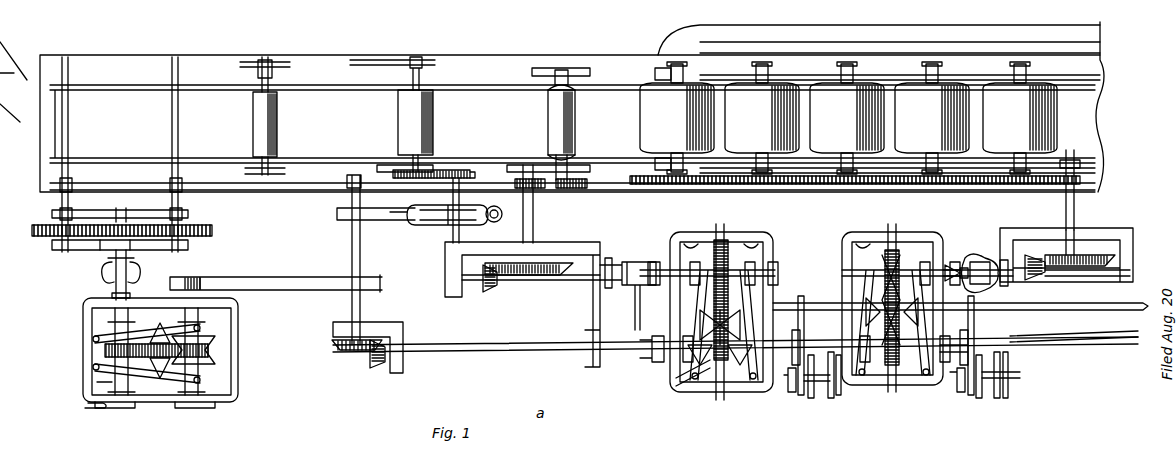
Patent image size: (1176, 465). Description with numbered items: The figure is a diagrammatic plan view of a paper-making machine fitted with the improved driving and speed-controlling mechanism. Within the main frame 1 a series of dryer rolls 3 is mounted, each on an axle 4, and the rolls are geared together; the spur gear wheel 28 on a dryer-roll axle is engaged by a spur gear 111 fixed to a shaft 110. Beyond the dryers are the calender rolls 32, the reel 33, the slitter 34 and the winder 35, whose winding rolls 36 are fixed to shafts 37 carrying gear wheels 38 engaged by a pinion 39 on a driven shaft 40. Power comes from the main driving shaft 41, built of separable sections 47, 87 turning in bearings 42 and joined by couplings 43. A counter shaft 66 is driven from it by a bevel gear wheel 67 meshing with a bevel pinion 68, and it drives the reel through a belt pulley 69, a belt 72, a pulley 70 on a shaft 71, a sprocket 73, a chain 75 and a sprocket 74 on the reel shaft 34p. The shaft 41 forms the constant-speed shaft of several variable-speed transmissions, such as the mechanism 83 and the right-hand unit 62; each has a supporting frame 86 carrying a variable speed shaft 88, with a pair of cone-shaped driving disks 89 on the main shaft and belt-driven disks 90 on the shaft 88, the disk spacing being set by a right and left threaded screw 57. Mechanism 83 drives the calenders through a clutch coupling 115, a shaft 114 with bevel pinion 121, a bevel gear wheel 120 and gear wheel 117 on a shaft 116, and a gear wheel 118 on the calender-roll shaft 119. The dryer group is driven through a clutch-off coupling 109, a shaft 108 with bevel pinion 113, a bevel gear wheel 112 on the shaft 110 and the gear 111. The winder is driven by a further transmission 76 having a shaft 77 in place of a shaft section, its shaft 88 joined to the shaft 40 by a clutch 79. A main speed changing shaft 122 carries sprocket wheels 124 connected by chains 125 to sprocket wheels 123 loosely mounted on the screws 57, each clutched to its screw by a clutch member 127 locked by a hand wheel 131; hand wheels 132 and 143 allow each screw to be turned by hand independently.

The main frame 1 is at (604, 186).
The dryer rolls 3 is at (848, 118).
The axle 4 is at (1016, 64).
The spur gear wheel 28 is at (1005, 180).
The calender rolls 32 is at (567, 118).
The reel 33 is at (424, 113).
The slitter 34 is at (278, 125).
The shaft of the reel 34p is at (410, 64).
The winder 35 is at (82, 261).
The winding rolls 36 is at (40, 232).
The shaft 37 is at (182, 210).
The gear wheels 38 is at (214, 231).
The pinion 39 is at (105, 245).
The driven shaft 40 is at (138, 245).
The main driving shaft 41 is at (1066, 346).
The bearings 42 is at (592, 368).
The couplings 43 is at (658, 365).
The shaft section 47 is at (868, 380).
The right and left threaded adjusting screw 57 is at (92, 382).
The gear casing 62 is at (928, 390).
The counter shaft 66 is at (350, 238).
The bevel gear wheel 67 is at (334, 343).
The bevel pinion 68 is at (370, 362).
The belt pulley 69 is at (340, 210).
The pulley 70 is at (440, 224).
The rotative shaft 71 is at (455, 232).
The belt 72 is at (395, 220).
The gear wheel or sprocket 73 is at (468, 176).
The gear wheel or sprocket 74 is at (400, 174).
The chain 75 is at (445, 173).
The variable speed power mechanism 76 is at (222, 400).
The shaft 77 is at (232, 302).
The clutch 79 is at (104, 278).
The variable speed power transmission mechanism 83 is at (722, 395).
The supporting frame 86 is at (845, 243).
The shaft section 87 is at (1120, 345).
The variable speed shaft 88 is at (108, 323).
The belt-driving disks 89 is at (732, 395).
The belt-driven disks 90 is at (728, 242).
The shaft 108 is at (1036, 277).
The friction clutch-off coupling 109 is at (988, 283).
The shaft 110 is at (1064, 225).
The spur gear 111 is at (1064, 180).
The bevel gear wheel 112 is at (1090, 272).
The bevel pinion 113 is at (1018, 262).
The shaft 114 is at (560, 280).
The friction clutch cut-off coupling 115 is at (632, 262).
The shaft 116 is at (535, 225).
The gear wheel 117 is at (520, 200).
The gear wheel 118 is at (561, 190).
The shaft of calender roll 119 is at (548, 165).
The bevel gear wheel 120 is at (496, 290).
The bevel pinion 121 is at (486, 290).
The main speed changing shaft 122 is at (1070, 310).
The gear or sprocket wheel 123 is at (978, 398).
The gear or sprocket wheel 124 is at (976, 306).
The sprocket chain 125 is at (975, 340).
The clutch member 127 is at (962, 392).
The hand wheel 131 is at (997, 398).
The hand wheel 132 is at (1010, 398).
The hand wheel 143 is at (100, 408).